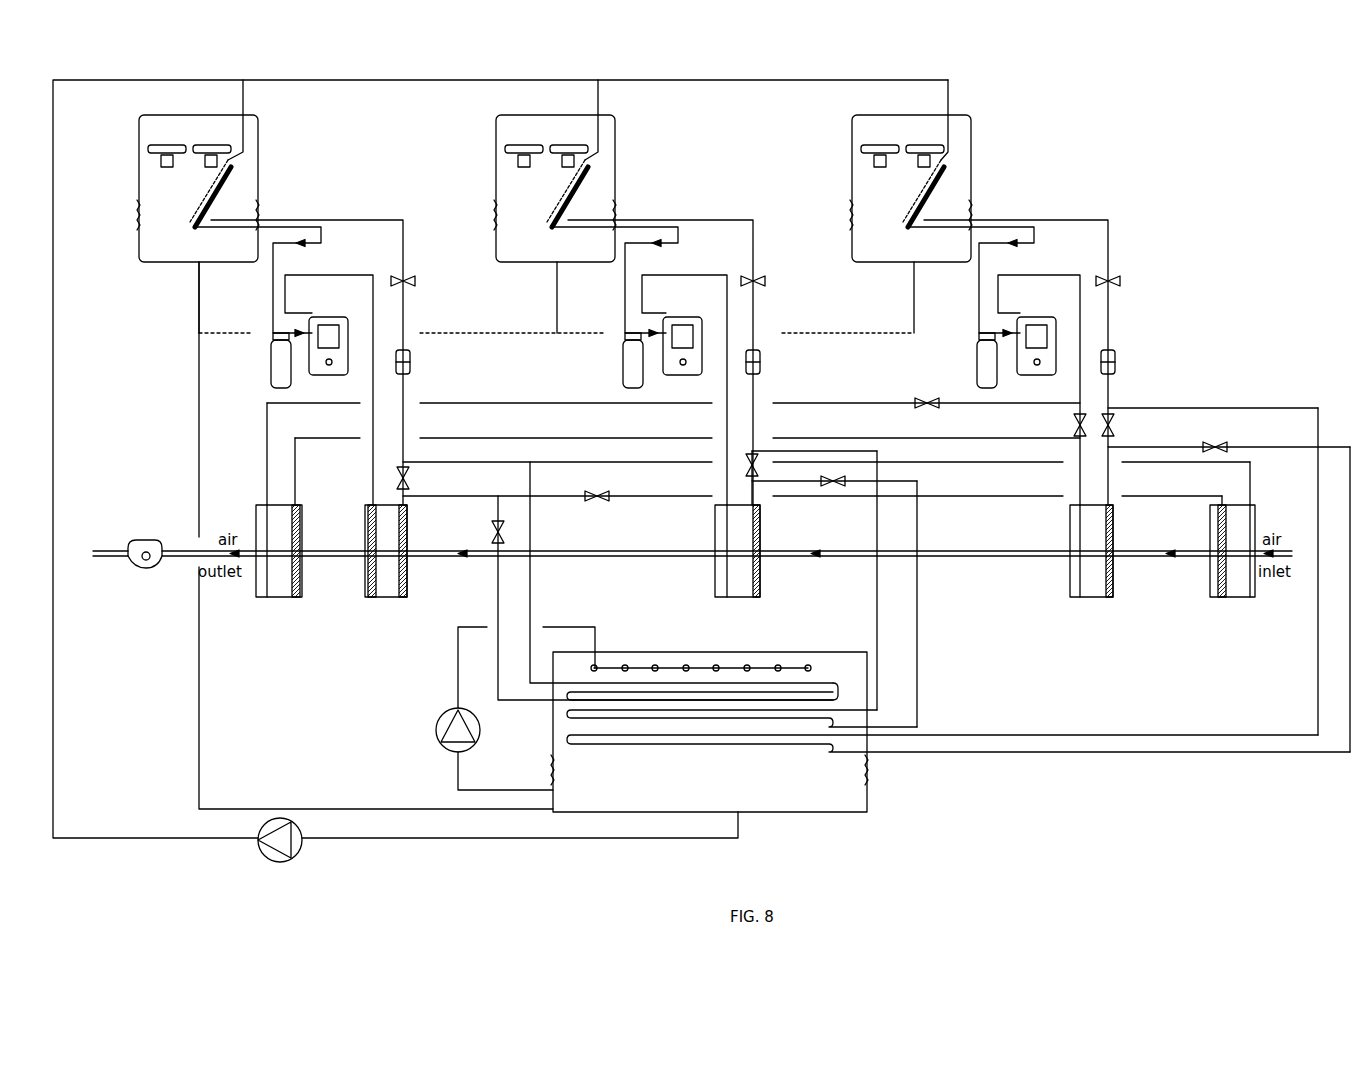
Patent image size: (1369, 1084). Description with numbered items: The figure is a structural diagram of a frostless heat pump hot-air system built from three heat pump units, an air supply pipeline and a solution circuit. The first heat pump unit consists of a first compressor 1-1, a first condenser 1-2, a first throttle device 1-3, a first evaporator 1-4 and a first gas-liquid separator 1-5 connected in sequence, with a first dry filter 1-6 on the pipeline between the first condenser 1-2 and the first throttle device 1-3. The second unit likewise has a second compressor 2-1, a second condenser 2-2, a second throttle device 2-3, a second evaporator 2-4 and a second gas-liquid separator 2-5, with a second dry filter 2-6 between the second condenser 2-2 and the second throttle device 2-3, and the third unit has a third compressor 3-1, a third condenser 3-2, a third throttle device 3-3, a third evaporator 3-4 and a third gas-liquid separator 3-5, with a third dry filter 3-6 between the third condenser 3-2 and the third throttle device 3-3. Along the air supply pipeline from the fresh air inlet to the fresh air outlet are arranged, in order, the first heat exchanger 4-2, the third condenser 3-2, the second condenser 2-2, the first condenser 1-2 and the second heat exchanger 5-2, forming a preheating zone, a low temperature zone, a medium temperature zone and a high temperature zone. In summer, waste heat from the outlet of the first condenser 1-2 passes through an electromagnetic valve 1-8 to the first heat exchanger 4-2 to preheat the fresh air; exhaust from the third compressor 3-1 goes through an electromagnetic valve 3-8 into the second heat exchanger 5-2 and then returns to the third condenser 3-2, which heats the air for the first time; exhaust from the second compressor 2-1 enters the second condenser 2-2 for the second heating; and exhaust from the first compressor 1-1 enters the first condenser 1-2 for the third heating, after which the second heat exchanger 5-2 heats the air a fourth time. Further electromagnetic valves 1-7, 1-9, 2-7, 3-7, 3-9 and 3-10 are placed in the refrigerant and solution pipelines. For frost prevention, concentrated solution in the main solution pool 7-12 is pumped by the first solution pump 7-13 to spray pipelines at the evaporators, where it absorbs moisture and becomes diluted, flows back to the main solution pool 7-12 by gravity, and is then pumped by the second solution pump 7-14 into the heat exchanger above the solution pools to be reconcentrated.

The first compressor 1-1 is at (329, 390).
The first condenser 1-2 is at (366, 551).
The first throttle device 1-3 is at (418, 285).
The first evaporator 1-4 is at (198, 171).
The first gas-liquid separator 1-5 is at (261, 360).
The first dry filter 1-6 is at (420, 363).
The electromagnetic valve 1-7 is at (419, 478).
The electromagnetic valve 1-8 is at (594, 484).
The electromagnetic valve 1-9 is at (479, 532).
The second compressor 2-1 is at (684, 390).
The second condenser 2-2 is at (712, 551).
The second throttle device 2-3 is at (768, 285).
The second evaporator 2-4 is at (555, 171).
The second gas-liquid separator 2-5 is at (613, 360).
The second dry filter 2-6 is at (770, 363).
The electromagnetic valve 2-7 is at (749, 457).
The third compressor 3-1 is at (1039, 390).
The third condenser 3-2 is at (1071, 551).
The third throttle device 3-3 is at (1123, 285).
The third evaporator 3-4 is at (911, 171).
The third gas-liquid separator 3-5 is at (967, 360).
The third dry filter 3-6 is at (1125, 363).
The electromagnetic valve 3-7 is at (1061, 425).
The electromagnetic valve 3-8 is at (876, 452).
The electromagnetic valve 3-9 is at (1123, 425).
The electromagnetic valve 3-10 is at (1208, 437).
The first heat exchanger 4-2 is at (1212, 551).
The second heat exchanger 5-2 is at (262, 545).
The main solution pool 7-12 is at (950, 732).
The first solution pump 7-13 is at (301, 843).
The second solution pump 7-14 is at (427, 730).